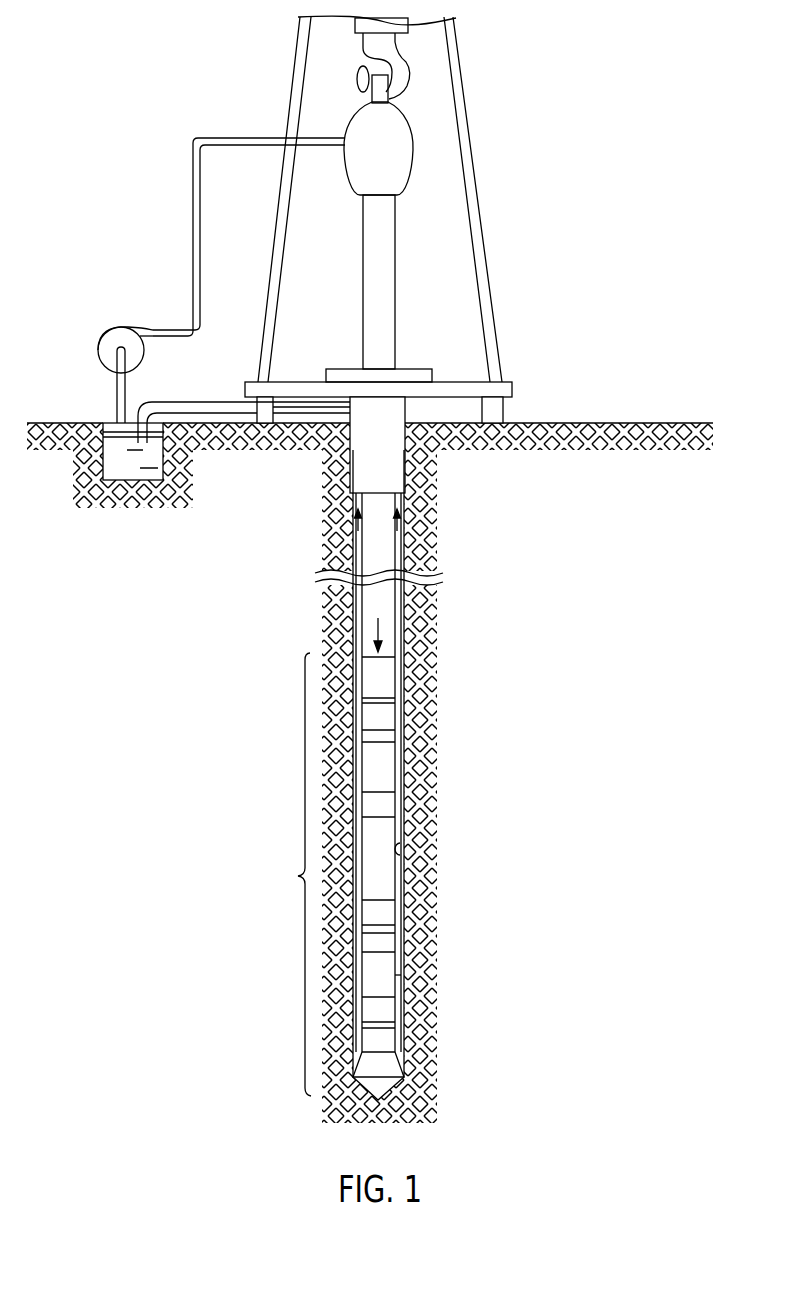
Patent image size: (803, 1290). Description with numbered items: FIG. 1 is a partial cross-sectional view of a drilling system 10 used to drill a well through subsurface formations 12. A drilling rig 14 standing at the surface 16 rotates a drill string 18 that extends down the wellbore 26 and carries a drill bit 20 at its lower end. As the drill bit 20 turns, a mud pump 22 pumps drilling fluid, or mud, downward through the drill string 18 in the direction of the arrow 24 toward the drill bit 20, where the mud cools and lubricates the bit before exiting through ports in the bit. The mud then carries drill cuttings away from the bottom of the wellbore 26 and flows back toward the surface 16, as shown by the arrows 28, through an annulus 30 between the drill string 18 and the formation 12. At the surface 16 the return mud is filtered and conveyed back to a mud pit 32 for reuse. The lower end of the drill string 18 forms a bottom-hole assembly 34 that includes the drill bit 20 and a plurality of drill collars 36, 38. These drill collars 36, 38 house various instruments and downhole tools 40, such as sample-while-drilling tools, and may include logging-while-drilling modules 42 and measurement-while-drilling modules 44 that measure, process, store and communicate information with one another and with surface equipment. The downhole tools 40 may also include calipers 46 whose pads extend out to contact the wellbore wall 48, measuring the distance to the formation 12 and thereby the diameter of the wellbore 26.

The drilling system 10 is at (618, 150).
The subsurface formations 12 is at (370, 773).
The drilling rig 14 is at (262, 109).
The surface 16 is at (590, 423).
The drill string 18 is at (402, 685).
The drill bit 20 is at (390, 1068).
The mud pump 22 is at (99, 342).
The arrow 24 is at (382, 625).
The wellbore 26 is at (400, 641).
The arrows 28 is at (401, 518).
The annulus 30 is at (400, 712).
The mud pit 32 is at (147, 470).
The bottom-hole assembly 34 is at (286, 874).
The drill collar 36 is at (398, 773).
The drill collar 38 is at (393, 963).
The downhole tools 40 is at (447, 868).
The logging-while-drilling module 42 is at (388, 783).
The measurement-while-drilling module 44 is at (386, 721).
The calipers 46 is at (400, 978).
The wellbore wall 48 is at (404, 851).